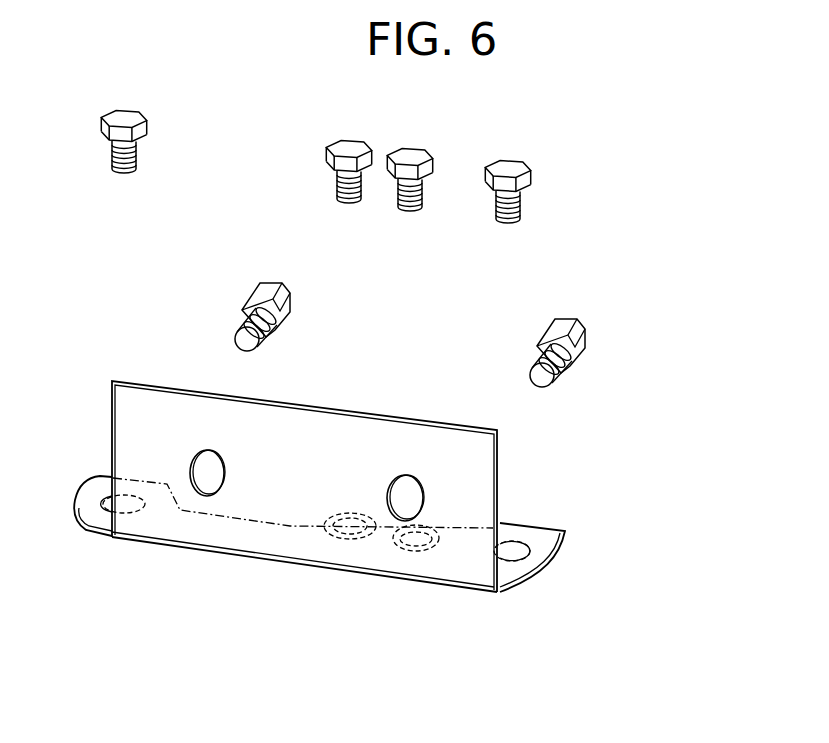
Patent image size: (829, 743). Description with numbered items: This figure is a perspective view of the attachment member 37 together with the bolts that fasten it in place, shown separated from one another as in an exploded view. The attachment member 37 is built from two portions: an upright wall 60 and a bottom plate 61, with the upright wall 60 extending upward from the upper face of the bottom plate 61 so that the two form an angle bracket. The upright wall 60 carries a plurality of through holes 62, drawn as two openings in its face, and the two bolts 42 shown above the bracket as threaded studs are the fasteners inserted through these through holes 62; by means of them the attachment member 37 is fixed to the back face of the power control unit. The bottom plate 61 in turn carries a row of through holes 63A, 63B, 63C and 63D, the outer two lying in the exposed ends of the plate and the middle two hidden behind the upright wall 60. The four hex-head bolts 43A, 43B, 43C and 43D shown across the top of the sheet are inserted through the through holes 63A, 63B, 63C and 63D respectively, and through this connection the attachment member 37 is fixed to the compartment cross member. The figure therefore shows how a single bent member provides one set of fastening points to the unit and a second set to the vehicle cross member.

The attachment member 37 is at (397, 505).
The bolt 42 is at (268, 292).
The bolt 43A is at (125, 120).
The bolt 43B is at (349, 148).
The bolt 43C is at (412, 157).
The bolt 43D is at (509, 169).
The upright wall 60 is at (394, 474).
The bottom plate 61 is at (374, 565).
The through hole 62 is at (207, 462).
The through hole 63A is at (122, 512).
The through hole 63B is at (352, 540).
The through hole 63C is at (413, 548).
The through hole 63D is at (512, 560).